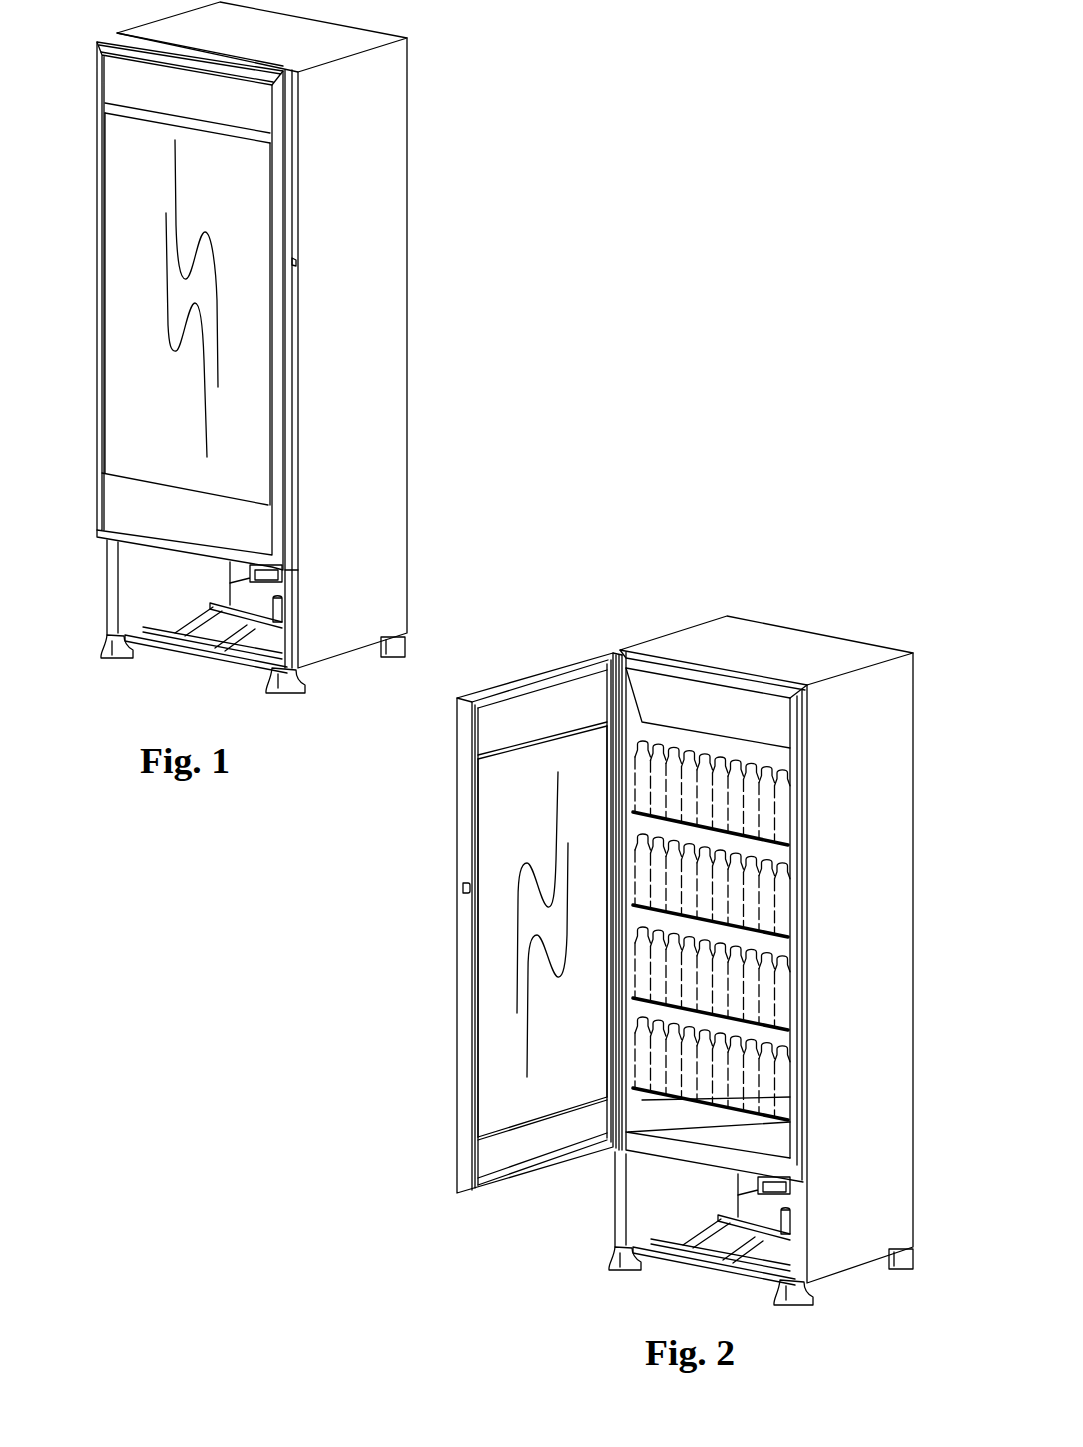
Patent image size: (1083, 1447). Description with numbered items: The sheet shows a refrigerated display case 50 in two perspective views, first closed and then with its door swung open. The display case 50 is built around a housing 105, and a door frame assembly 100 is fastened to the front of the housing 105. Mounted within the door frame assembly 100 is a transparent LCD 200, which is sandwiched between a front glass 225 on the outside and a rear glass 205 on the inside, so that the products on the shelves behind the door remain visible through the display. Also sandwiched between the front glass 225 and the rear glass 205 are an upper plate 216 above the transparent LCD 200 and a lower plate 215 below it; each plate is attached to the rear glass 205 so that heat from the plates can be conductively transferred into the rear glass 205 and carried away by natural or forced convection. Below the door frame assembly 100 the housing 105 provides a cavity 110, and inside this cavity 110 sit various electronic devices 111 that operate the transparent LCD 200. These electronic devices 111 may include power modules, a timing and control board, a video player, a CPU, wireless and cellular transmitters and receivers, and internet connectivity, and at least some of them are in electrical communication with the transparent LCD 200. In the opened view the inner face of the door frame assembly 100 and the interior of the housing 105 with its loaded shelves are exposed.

In FIG. 1, the refrigerated display case 50 is at (466, 45).
In FIG. 2, the refrigerated display case 50 is at (846, 597).
In FIG. 1, the door frame assembly 100 is at (285, 203).
In FIG. 2, the door frame assembly 100 is at (553, 665).
In FIG. 1, the housing 105 is at (380, 124).
In FIG. 2, the housing 105 is at (830, 655).
In FIG. 1, the cavity 110 is at (152, 590).
In FIG. 2, the cavity 110 is at (660, 1205).
In FIG. 1, the electronic devices 111 is at (225, 605).
In FIG. 2, the electronic devices 111 is at (733, 1217).
In FIG. 1, the transparent LCD 200 is at (140, 247).
In FIG. 2, the transparent LCD 200 is at (515, 800).
In FIG. 2, the rear glass 205 is at (513, 903).
In FIG. 1, the lower plate 215 is at (118, 512).
In FIG. 2, the lower plate 215 is at (515, 1150).
In FIG. 1, the upper plate 216 is at (117, 83).
In FIG. 2, the upper plate 216 is at (515, 723).
In FIG. 1, the front glass 225 is at (140, 190).